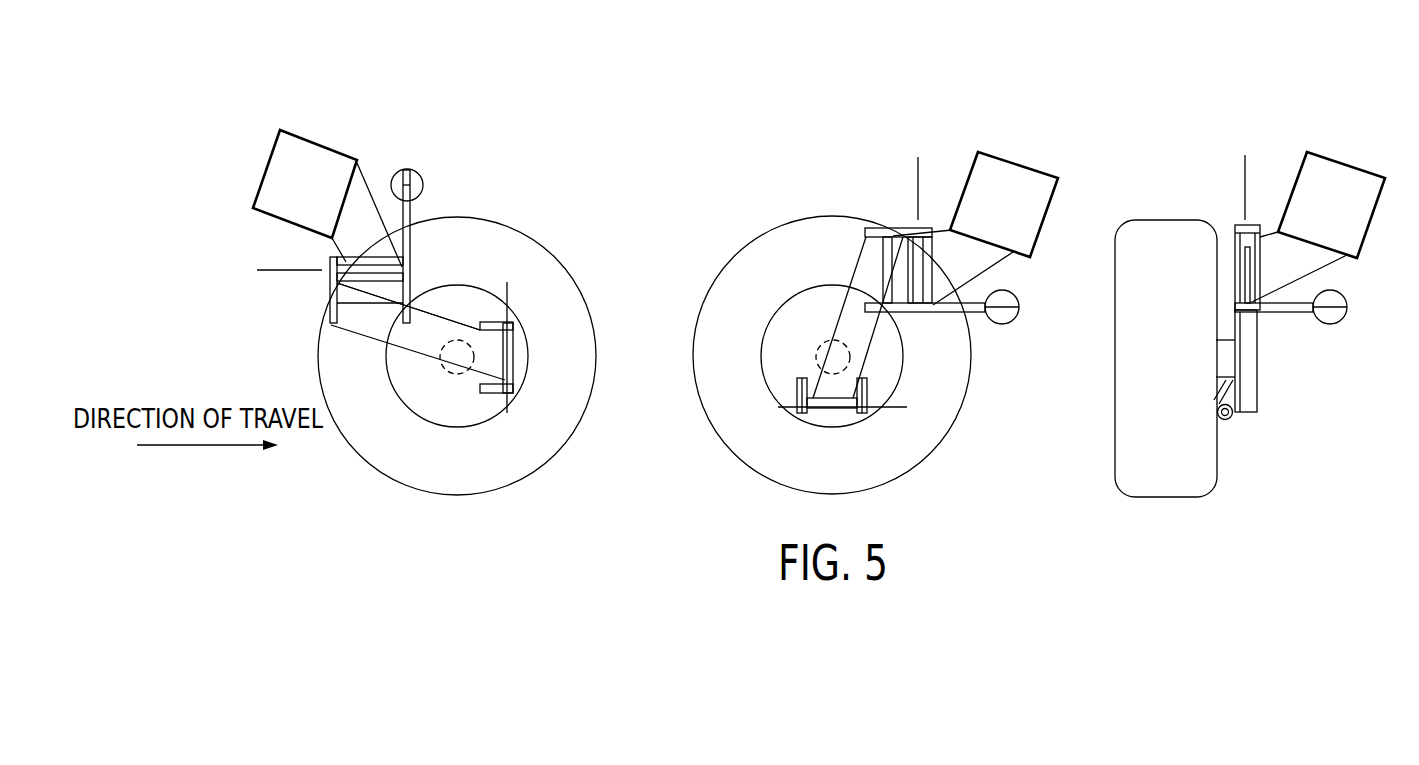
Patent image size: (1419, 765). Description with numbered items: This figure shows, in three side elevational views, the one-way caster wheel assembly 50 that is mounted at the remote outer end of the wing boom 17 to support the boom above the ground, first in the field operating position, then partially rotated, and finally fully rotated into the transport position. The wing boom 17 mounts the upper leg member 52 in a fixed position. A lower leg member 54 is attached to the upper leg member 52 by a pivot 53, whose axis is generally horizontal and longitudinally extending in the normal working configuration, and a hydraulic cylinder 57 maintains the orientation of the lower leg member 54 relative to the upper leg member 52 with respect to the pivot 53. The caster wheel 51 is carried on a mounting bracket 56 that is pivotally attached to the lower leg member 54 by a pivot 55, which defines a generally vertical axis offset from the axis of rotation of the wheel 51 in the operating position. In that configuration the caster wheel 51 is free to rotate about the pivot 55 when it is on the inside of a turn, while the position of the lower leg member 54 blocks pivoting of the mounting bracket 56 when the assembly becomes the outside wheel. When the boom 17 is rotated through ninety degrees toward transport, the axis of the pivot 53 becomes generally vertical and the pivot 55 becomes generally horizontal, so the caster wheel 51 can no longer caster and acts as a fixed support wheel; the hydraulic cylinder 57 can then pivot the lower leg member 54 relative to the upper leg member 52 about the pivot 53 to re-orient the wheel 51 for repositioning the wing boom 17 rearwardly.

In FIG. 5A, the wing boom 17 is at (308, 150).
In FIG. 5B, the wing boom 17 is at (1004, 204).
In FIG. 5C, the wing boom 17 is at (1331, 205).
In FIG. 5A, the caster wheel assembly 50 is at (437, 88).
In FIG. 5B, the caster wheel assembly 50 is at (844, 88).
In FIG. 5C, the caster wheel assembly 50 is at (1181, 90).
In FIG. 5A, the caster wheel 51 is at (457, 356).
In FIG. 5B, the caster wheel 51 is at (745, 445).
In FIG. 5A, the upper leg member 52 is at (356, 200).
In FIG. 5B, the upper leg member 52 is at (913, 314).
In FIG. 5C, the upper leg member 52 is at (1298, 267).
In FIG. 5A, the pivot 53 is at (287, 272).
In FIG. 5B, the pivot 53 is at (925, 234).
In FIG. 5C, the pivot 53 is at (1263, 287).
In FIG. 5A, the lower leg member 54 is at (435, 325).
In FIG. 5A, the pivot 55 is at (507, 293).
In FIG. 5B, the pivot 55 is at (887, 407).
In FIG. 5A, the mounting bracket 56 is at (450, 372).
In FIG. 5B, the mounting bracket 56 is at (825, 348).
In FIG. 5A, the hydraulic cylinder 57 is at (421, 174).
In FIG. 5B, the hydraulic cylinder 57 is at (1015, 320).
In FIG. 5C, the hydraulic cylinder 57 is at (1343, 323).